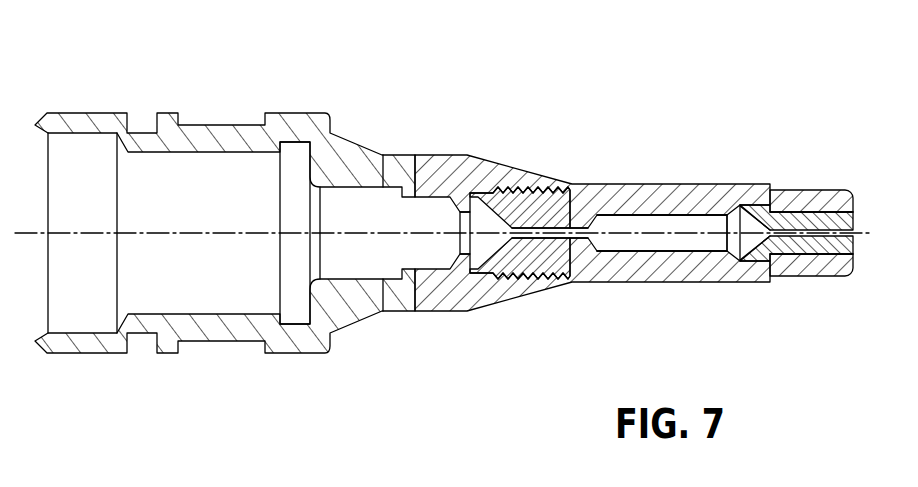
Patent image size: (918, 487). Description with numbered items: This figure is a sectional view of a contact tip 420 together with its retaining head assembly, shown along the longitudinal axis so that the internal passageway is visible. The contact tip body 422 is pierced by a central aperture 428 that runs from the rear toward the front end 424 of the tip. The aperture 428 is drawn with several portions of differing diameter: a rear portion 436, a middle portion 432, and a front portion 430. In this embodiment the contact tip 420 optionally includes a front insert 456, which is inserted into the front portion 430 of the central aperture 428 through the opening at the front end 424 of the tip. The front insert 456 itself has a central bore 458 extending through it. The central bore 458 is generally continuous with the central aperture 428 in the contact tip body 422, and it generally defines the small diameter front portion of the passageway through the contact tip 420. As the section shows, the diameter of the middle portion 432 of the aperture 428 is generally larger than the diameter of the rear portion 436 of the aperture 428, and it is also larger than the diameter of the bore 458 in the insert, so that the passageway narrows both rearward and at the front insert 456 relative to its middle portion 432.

The contact tip 420 is at (809, 117).
The contact tip body 422 is at (737, 283).
The front end 424 is at (856, 278).
The central aperture 428 is at (627, 250).
The front portion 430 is at (791, 256).
The middle portion 432 is at (670, 222).
The rear portion 436 is at (557, 228).
The front insert 456 is at (810, 212).
The central bore 458 is at (778, 230).